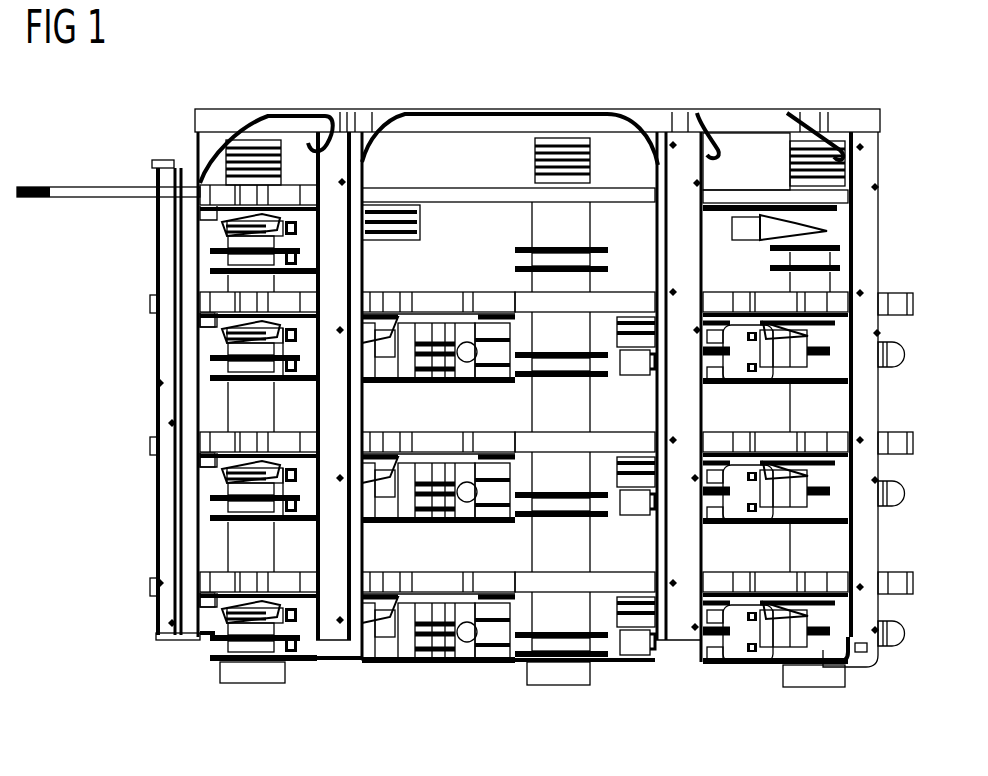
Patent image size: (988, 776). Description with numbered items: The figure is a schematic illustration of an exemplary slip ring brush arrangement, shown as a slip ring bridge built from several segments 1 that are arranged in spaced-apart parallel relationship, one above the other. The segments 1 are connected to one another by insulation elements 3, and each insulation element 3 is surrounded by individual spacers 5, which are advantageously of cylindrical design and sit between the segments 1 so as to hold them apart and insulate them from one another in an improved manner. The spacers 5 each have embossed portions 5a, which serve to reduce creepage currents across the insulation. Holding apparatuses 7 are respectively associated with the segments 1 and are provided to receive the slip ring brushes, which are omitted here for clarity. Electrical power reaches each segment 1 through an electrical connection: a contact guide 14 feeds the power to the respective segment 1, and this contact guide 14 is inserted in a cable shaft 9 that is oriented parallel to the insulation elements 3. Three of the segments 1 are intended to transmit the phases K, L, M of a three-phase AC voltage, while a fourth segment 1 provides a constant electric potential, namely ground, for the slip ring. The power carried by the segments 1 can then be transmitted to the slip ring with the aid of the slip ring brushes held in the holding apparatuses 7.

The segment 1 is at (465, 394).
The insulation element 3 is at (551, 148).
The spacer 5 is at (252, 683).
The embossed portion 5a is at (577, 238).
The holding apparatus 7 is at (428, 680).
The cable shaft 9 is at (296, 110).
The contact guide 14 is at (693, 152).
The phase K is at (134, 300).
The phase L is at (134, 440).
The phase M is at (485, 645).